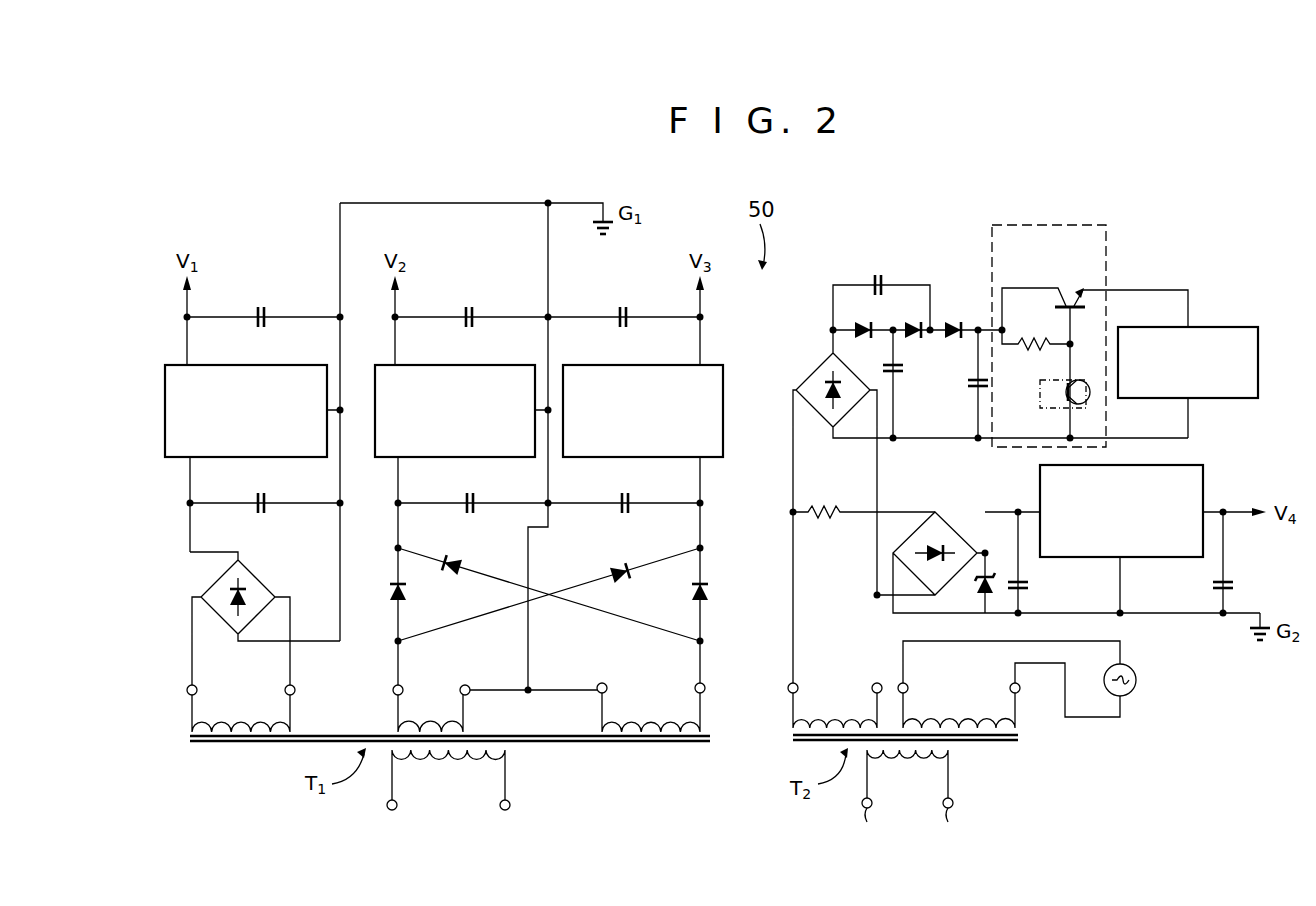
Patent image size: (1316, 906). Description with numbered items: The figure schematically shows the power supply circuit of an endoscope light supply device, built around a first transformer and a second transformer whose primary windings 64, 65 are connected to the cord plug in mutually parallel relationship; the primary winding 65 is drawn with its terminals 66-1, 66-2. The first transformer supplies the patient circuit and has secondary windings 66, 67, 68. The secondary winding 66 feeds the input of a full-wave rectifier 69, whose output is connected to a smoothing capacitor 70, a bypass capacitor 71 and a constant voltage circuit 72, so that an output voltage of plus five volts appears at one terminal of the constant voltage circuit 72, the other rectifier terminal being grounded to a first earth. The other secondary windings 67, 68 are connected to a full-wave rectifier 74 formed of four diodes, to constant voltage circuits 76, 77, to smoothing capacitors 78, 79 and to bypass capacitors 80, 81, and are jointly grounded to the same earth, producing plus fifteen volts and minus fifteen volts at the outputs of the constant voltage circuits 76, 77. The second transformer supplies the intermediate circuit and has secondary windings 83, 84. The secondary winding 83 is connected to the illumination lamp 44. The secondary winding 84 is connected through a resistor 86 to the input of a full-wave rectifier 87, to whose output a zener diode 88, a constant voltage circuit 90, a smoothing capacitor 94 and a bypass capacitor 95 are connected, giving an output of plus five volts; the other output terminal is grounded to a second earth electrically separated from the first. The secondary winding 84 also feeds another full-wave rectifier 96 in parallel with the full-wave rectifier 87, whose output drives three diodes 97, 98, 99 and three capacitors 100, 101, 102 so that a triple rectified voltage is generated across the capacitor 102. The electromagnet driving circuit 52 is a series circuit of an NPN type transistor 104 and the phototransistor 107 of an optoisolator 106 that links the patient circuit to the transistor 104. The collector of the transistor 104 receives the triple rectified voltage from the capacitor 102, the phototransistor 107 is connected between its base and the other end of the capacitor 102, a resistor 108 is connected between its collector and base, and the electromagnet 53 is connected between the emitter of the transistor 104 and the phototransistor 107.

The illumination lamp 44 is at (1137, 684).
The electromagnet driving circuit 52 is at (1044, 224).
The electromagnet 53 is at (1222, 326).
The primary winding 64 is at (509, 781).
The primary winding 65 is at (948, 782).
The secondary winding 66 is at (292, 714).
The primary winding terminal 66-1 is at (867, 827).
The primary winding terminal 66-2 is at (949, 827).
The secondary winding 67 is at (406, 708).
The secondary winding 68 is at (705, 714).
The full-wave rectifier 69 is at (254, 574).
The smoothing capacitor 70 is at (274, 503).
The bypass capacitor 71 is at (268, 314).
The constant voltage circuit 72 is at (284, 365).
The full-wave rectifier 74 is at (712, 588).
The constant voltage circuit 76 is at (490, 365).
The constant voltage circuit 77 is at (645, 365).
The smoothing capacitor 78 is at (481, 503).
The smoothing capacitor 79 is at (633, 503).
The bypass capacitor 80 is at (476, 314).
The bypass capacitor 81 is at (628, 314).
The secondary winding 83 is at (908, 710).
The secondary winding 84 is at (801, 710).
The resistor 86 is at (835, 520).
The full-wave rectifier 87 is at (956, 522).
The zener diode 88 is at (980, 604).
The constant voltage circuit 90 is at (1204, 480).
The smoothing capacitor 94 is at (1028, 589).
The bypass capacitor 95 is at (1233, 589).
The full-wave rectifier 96 is at (804, 374).
The diode 97 is at (864, 324).
The diode 98 is at (914, 324).
The diode 99 is at (956, 326).
The capacitor 100 is at (878, 276).
The capacitor 101 is at (905, 372).
The capacitor 102 is at (959, 384).
The NPN type transistor 104 is at (1066, 288).
The optoisolator 106 is at (1040, 392).
The phototransistor 107 is at (1084, 384).
The resistor 108 is at (1024, 340).